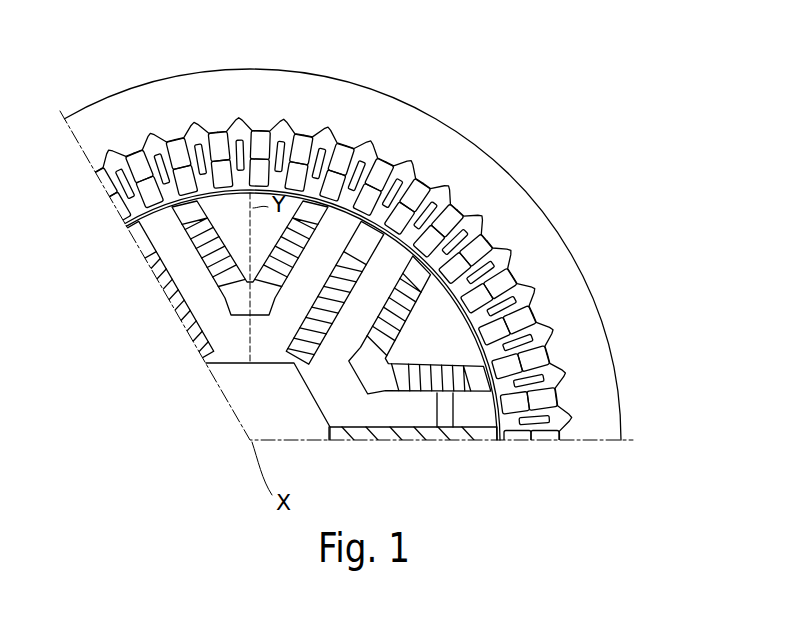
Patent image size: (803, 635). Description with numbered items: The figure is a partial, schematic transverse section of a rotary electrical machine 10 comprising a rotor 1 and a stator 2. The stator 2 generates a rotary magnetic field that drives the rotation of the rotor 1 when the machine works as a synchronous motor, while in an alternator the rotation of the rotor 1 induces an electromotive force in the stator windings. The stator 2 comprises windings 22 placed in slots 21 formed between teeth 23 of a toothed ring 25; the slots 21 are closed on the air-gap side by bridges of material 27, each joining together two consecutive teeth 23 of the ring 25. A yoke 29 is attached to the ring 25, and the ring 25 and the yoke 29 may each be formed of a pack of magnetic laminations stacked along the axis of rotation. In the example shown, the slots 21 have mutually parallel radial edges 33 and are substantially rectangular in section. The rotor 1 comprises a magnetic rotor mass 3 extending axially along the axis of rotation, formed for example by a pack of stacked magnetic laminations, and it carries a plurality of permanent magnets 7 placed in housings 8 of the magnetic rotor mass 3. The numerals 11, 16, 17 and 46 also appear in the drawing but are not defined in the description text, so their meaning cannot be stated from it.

The rotor 1 is at (331, 443).
The stator 2 is at (538, 180).
The magnetic rotor mass 3 is at (222, 393).
The permanent magnets 7 is at (177, 303).
The housings 8 is at (253, 321).
The rotary electrical machine 10 is at (596, 114).
The pole piece 11 is at (232, 216).
The rotor axis 16 is at (138, 224).
The pole region 17 is at (454, 315).
The slots 21 is at (461, 199).
The windings 22 is at (307, 133).
The teeth 23 is at (580, 414).
The toothed ring 25 is at (532, 443).
The bridges of material 27 is at (496, 277).
The yoke 29 is at (582, 388).
The radial edges 33 is at (412, 157).
The air gap 46 is at (497, 443).